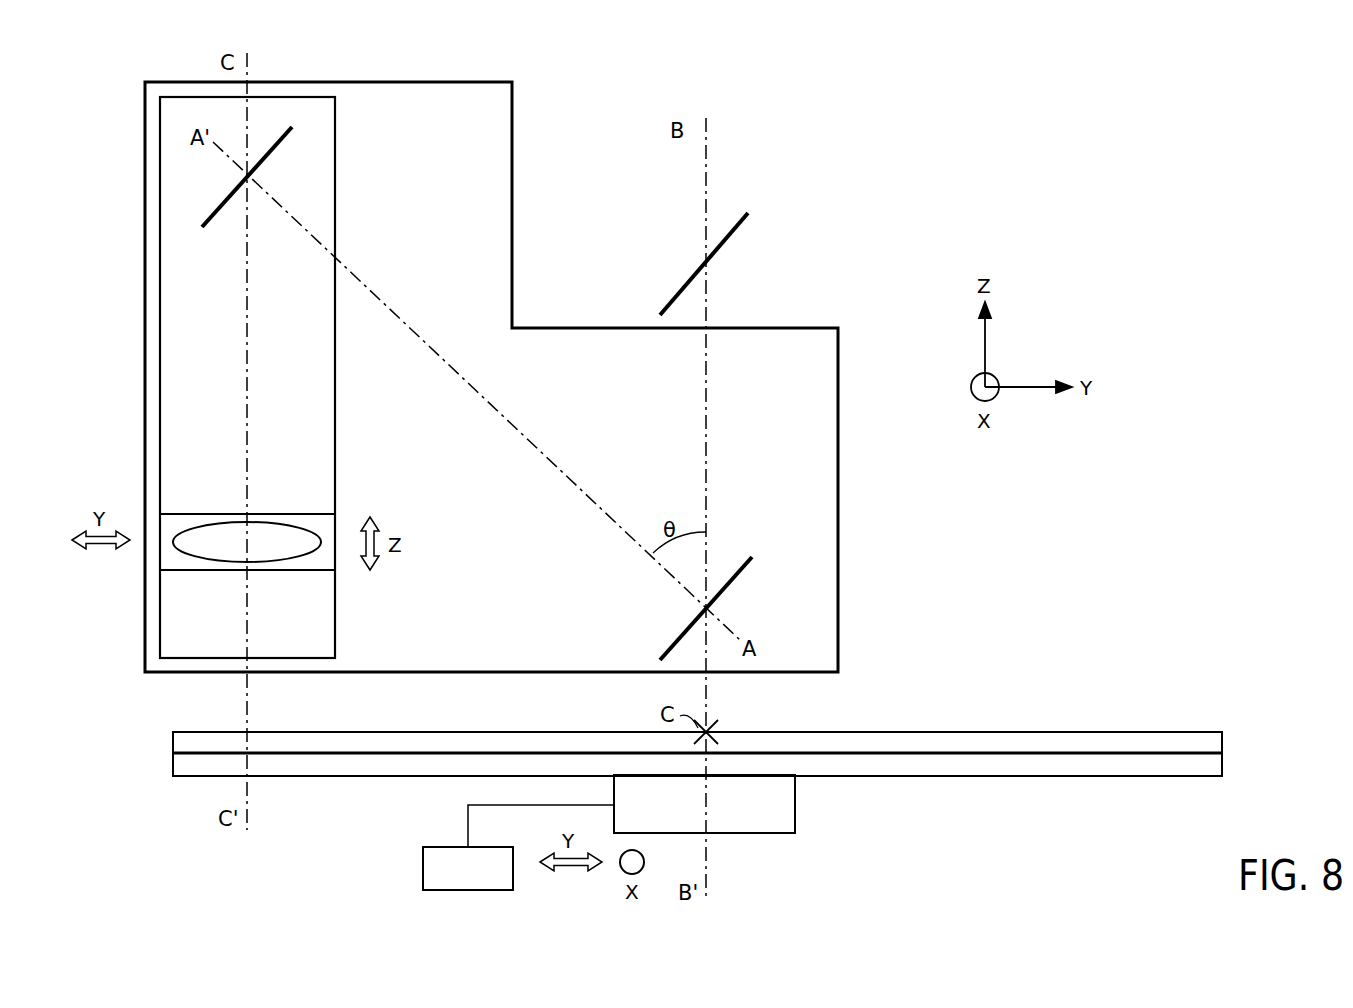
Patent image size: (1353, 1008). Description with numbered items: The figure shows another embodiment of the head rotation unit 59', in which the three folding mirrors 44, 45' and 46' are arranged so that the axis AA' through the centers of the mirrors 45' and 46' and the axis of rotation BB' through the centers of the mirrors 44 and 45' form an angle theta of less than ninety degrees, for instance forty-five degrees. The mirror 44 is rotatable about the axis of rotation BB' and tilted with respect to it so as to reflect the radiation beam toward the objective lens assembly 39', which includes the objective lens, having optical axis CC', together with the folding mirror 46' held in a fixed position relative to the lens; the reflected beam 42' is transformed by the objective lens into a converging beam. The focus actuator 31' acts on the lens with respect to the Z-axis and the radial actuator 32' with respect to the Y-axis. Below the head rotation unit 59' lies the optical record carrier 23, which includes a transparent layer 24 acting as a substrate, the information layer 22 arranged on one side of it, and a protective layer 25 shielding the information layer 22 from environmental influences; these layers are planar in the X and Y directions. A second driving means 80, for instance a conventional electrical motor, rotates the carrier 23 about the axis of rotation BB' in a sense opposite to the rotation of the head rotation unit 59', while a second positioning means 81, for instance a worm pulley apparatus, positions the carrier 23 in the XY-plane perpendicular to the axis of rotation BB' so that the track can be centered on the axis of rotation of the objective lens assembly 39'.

The information layer 22 is at (1000, 755).
The optical record carrier 23 is at (702, 756).
The transparent layer 24 is at (1067, 742).
The protective layer 25 is at (1149, 767).
The focus actuator 31' is at (302, 525).
The radial actuator 32' is at (302, 525).
The objective lens assembly 39' is at (276, 377).
The reflected radiation beam 42' is at (286, 566).
The folding mirror 44 is at (670, 298).
The folding mirror 45' is at (674, 608).
The folding mirror 46' is at (297, 177).
The head rotation unit 59' is at (527, 377).
The second driving means 80 is at (767, 833).
The second positioning means 81 is at (423, 868).